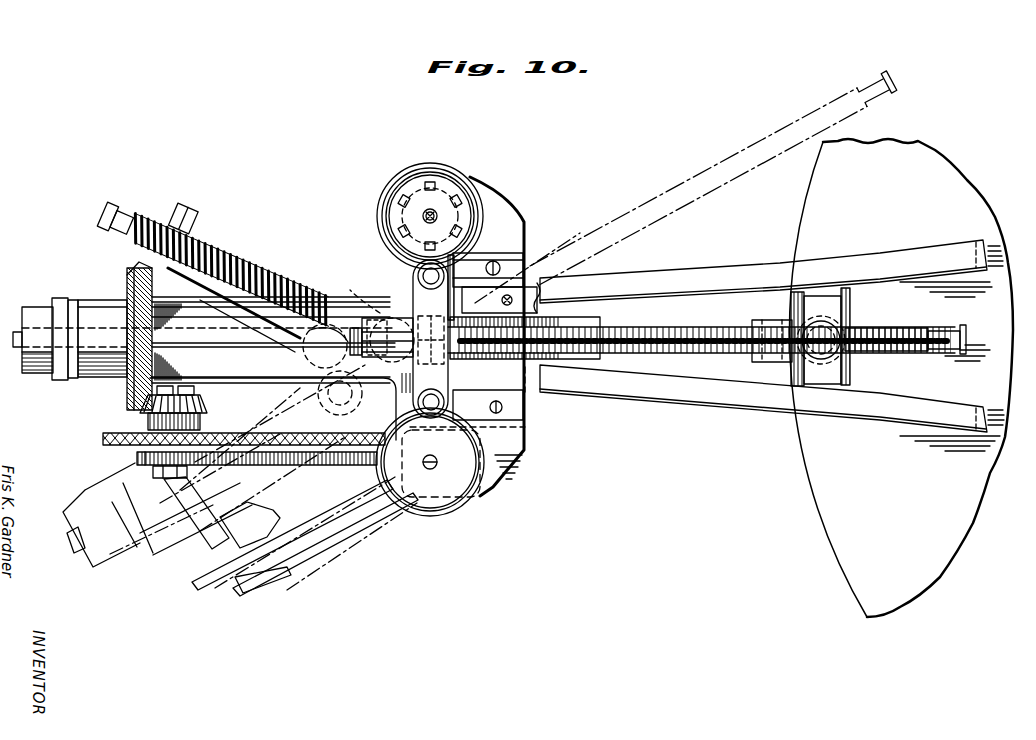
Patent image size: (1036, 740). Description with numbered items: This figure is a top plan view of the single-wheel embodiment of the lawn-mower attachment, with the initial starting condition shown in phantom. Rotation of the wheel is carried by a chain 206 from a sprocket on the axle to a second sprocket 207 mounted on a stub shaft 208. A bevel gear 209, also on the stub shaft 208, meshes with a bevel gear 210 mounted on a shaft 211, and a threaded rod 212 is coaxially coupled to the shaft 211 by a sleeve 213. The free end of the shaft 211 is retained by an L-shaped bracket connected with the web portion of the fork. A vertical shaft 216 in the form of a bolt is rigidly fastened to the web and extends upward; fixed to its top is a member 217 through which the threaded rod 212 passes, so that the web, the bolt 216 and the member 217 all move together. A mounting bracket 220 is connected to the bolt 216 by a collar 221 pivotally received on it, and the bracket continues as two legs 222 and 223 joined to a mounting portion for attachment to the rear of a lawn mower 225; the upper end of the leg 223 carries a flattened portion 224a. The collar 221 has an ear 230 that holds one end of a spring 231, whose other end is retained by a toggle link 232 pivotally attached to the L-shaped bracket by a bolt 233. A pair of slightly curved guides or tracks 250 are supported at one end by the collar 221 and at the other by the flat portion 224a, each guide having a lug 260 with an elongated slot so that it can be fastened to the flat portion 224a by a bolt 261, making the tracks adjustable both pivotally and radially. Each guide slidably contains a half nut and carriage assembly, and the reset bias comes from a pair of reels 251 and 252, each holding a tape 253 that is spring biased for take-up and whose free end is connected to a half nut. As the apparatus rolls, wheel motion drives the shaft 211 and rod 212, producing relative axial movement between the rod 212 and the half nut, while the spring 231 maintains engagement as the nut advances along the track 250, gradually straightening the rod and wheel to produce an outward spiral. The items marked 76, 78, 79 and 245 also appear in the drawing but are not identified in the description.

The screw 76 is at (543, 296).
The bolt 78 is at (477, 267).
The housing bracket 79 is at (517, 277).
The chain 206 is at (333, 452).
The sprocket 207 is at (104, 438).
The stub shaft 208 is at (168, 474).
The bevel gear 209 is at (199, 401).
The bevel gear 210 is at (130, 286).
The shaft 211 is at (200, 343).
The threaded rod 212 is at (655, 335).
The sleeve 213 is at (390, 320).
The vertical shaft 216 is at (445, 385).
The member 217 is at (398, 328).
The mounting bracket 220 is at (752, 365).
The collar 221 is at (348, 392).
The leg 222 is at (627, 358).
The leg 223 is at (792, 385).
The flattened portion 224a is at (847, 327).
The lawn mower 225 is at (825, 497).
The ear 230 is at (362, 318).
The spring 231 is at (197, 272).
The toggle link 232 is at (124, 212).
The bolt 233 is at (312, 360).
The bearing 245 is at (66, 380).
The guides 250 is at (661, 282).
The reel 251 is at (455, 492).
The reel 252 is at (456, 170).
The tape 253 is at (392, 220).
The lug 260 is at (845, 294).
The bolt 261 is at (790, 303).